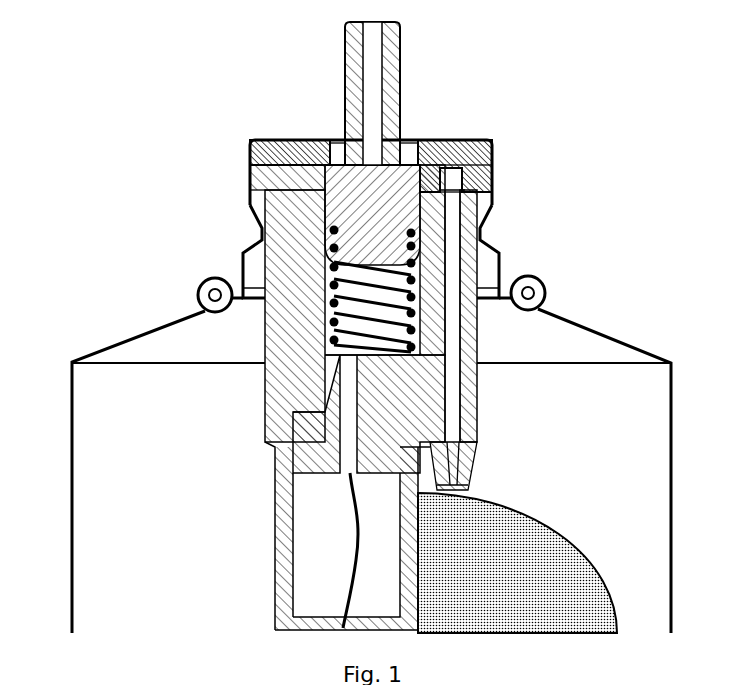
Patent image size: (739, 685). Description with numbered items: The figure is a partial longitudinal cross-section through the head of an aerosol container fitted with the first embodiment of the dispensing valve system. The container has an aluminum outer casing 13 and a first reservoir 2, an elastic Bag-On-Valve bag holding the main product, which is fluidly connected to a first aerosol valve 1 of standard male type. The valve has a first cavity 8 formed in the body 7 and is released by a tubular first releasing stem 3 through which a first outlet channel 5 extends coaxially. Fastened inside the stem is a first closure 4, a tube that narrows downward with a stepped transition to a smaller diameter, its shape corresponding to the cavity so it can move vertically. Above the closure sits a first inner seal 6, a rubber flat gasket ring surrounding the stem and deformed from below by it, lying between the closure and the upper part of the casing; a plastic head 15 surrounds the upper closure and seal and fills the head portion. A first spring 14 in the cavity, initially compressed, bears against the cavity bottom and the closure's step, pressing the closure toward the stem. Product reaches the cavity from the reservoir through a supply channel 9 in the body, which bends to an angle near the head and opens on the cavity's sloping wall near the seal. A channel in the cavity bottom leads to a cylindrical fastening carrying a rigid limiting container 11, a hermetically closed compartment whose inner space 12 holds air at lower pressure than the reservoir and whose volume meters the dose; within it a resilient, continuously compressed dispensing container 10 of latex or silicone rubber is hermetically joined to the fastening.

The first aerosol valve 1 is at (250, 138).
The first reservoir 2 is at (548, 524).
The first releasing stem 3 is at (388, 70).
The first closure 4 is at (318, 143).
The first outlet channel 5 is at (370, 50).
The first inner seal 6 is at (417, 145).
The body 7 is at (253, 190).
The first cavity 8 is at (325, 225).
The supply channel 9 is at (462, 150).
The dispensing container 10 is at (343, 533).
The rigid limiting container 11 is at (283, 573).
The inner space 12 is at (275, 518).
The outer casing 13 is at (500, 250).
The first spring 14 is at (327, 320).
The head 15 is at (493, 148).